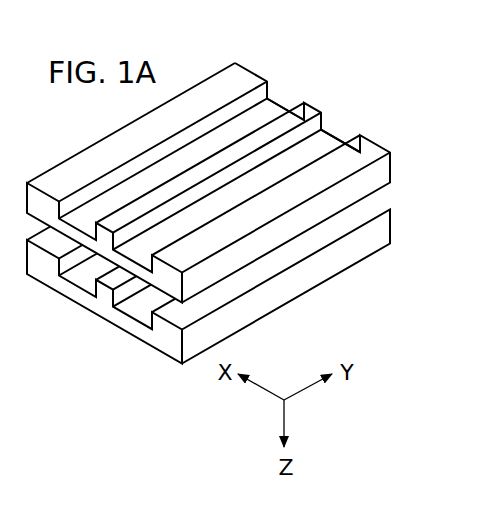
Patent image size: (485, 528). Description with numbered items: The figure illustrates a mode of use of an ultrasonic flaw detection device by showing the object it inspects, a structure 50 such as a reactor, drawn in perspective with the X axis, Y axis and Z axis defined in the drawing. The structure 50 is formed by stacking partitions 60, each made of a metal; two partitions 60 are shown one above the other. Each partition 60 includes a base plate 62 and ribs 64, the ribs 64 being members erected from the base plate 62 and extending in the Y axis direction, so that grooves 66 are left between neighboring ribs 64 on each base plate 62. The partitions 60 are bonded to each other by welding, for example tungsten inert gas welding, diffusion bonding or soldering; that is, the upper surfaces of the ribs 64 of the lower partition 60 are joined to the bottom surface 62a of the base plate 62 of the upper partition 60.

The structure 50 is at (382, 84).
The partition 60 is at (393, 167).
The base plate 62 is at (276, 103).
The bottom surface 62a is at (300, 231).
The rib 64 is at (253, 74).
The groove bottom 66 is at (354, 128).